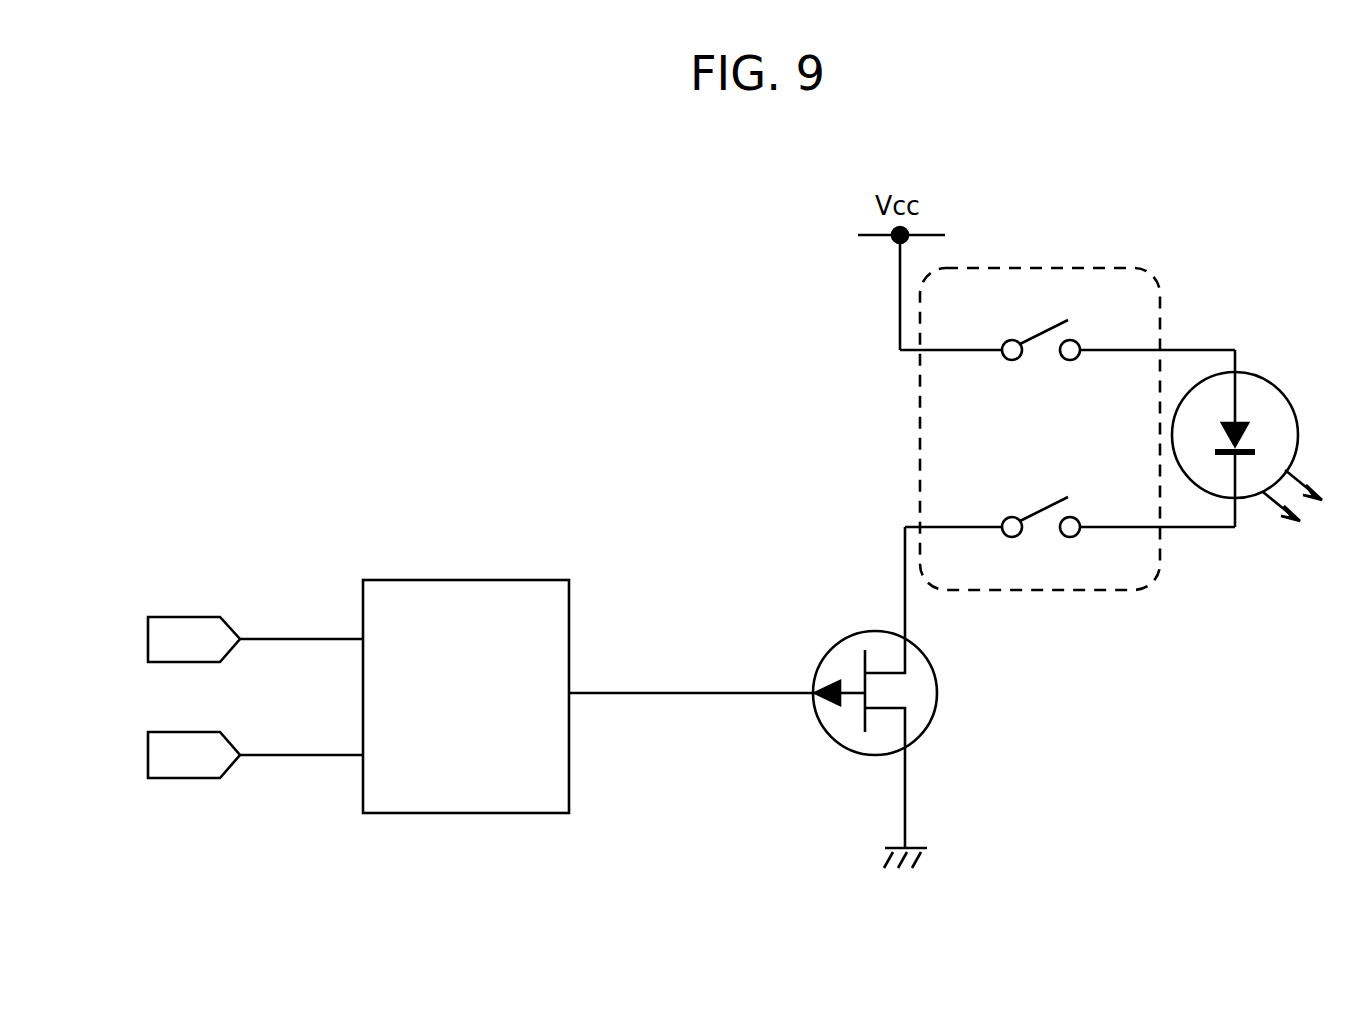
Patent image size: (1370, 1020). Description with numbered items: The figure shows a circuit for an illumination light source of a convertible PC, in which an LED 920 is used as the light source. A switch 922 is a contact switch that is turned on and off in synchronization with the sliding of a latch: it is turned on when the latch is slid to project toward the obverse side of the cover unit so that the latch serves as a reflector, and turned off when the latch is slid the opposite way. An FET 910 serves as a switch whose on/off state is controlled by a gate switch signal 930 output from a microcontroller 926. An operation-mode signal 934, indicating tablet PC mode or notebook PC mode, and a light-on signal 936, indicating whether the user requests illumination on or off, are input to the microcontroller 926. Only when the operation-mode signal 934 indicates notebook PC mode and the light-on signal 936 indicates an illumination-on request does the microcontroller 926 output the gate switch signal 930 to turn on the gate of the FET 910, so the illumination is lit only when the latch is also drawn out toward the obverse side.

The FET 910 is at (853, 792).
The LED 920 is at (1278, 387).
The switch 922 is at (1062, 268).
The microcontroller 926 is at (487, 580).
The gate switch signal 930 is at (660, 640).
The operation-mode signal 934 is at (170, 550).
The light-on signal 936 is at (190, 820).